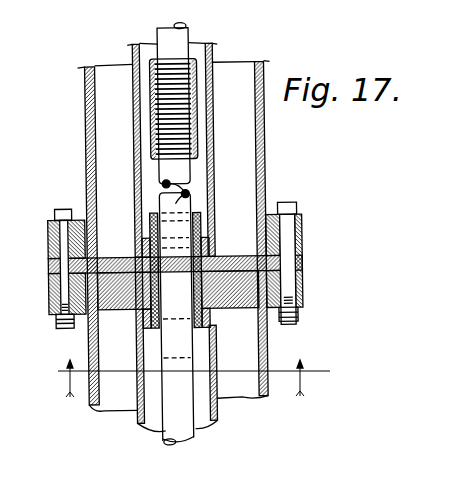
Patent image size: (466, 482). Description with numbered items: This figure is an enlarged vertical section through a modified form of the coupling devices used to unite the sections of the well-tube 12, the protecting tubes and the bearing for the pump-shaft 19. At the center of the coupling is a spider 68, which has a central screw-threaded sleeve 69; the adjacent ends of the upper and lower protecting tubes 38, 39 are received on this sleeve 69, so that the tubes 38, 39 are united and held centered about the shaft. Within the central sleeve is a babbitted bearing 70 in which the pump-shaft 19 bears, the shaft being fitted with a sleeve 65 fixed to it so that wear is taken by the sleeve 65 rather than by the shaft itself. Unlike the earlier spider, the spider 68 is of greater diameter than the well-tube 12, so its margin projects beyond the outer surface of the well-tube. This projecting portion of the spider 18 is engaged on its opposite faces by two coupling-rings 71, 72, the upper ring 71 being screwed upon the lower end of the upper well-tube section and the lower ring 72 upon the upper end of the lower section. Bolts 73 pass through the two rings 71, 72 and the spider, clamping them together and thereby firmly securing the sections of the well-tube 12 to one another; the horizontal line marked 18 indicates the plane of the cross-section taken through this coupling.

The well-tube 12 is at (266, 163).
The spider 18 is at (319, 259).
The pump-shaft 19 is at (181, 202).
The tube 38 is at (137, 176).
The tube 39 is at (140, 354).
The sleeve 65 is at (193, 212).
The spider 68 is at (233, 262).
The central sleeve 69 is at (147, 238).
The babbitted bearing 70 is at (150, 261).
The coupling-ring 71 is at (50, 220).
The coupling-ring 72 is at (54, 290).
The bolts 73 is at (64, 241).